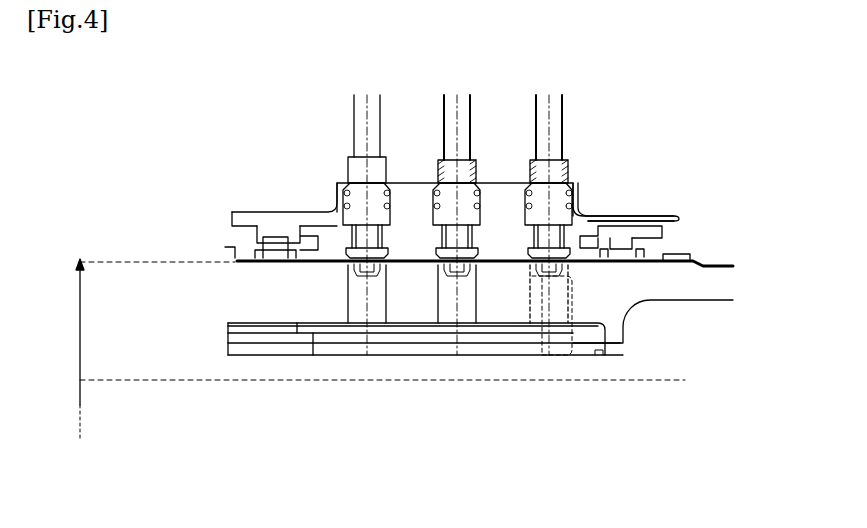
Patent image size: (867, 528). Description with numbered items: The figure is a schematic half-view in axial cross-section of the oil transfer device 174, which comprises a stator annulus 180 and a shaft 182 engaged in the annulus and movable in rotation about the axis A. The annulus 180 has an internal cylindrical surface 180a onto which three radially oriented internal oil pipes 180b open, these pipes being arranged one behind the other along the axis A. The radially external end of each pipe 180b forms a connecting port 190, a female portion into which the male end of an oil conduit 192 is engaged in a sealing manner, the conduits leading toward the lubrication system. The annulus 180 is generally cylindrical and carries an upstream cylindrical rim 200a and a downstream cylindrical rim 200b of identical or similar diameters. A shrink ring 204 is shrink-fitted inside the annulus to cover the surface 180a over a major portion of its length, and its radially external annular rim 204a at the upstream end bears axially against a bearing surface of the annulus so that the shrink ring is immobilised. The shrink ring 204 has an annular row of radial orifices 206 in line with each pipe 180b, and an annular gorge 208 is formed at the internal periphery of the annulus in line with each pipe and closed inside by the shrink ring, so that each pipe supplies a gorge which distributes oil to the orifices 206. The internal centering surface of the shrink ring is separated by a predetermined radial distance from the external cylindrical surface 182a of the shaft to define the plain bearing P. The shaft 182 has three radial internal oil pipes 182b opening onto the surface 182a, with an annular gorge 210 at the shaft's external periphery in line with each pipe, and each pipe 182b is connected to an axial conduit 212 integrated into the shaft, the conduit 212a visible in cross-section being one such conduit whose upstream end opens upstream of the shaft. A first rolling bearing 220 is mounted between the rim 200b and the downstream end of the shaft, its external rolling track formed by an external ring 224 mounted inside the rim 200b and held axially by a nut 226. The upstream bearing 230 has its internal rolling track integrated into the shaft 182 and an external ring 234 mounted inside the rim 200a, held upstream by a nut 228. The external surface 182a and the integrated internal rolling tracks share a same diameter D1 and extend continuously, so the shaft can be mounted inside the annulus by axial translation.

The oil transfer device 174 is at (693, 349).
The stator annulus 180 is at (624, 213).
The internal cylindrical surface 180a is at (502, 262).
The internal oil pipes 180b is at (438, 236).
The shaft 182 is at (729, 300).
The external cylindrical surface 182a is at (528, 326).
The internal oil pipes 182b is at (583, 345).
The connecting port 190 is at (343, 192).
The oil conduit 192 is at (443, 115).
The upstream cylindrical rim 200a is at (243, 212).
The downstream cylindrical rim 200b is at (679, 214).
The shrink ring 204 is at (335, 258).
The radially external annular rim 204a is at (310, 259).
The radial orifices 206 is at (369, 258).
The annular gorge 208 is at (447, 168).
The annular gorge 210 is at (447, 387).
The conduit 212 is at (460, 365).
The guide pin tip 212a is at (466, 330).
The first rolling bearing 220 is at (628, 265).
The external ring 224 is at (648, 240).
The nut 226 is at (665, 228).
The nut 228 is at (258, 229).
The rolling bearing 230 is at (273, 257).
The external ring 234 is at (263, 240).
The plain bearing P is at (432, 273).
The diameter D1 is at (368, 349).
The axis A is at (110, 380).